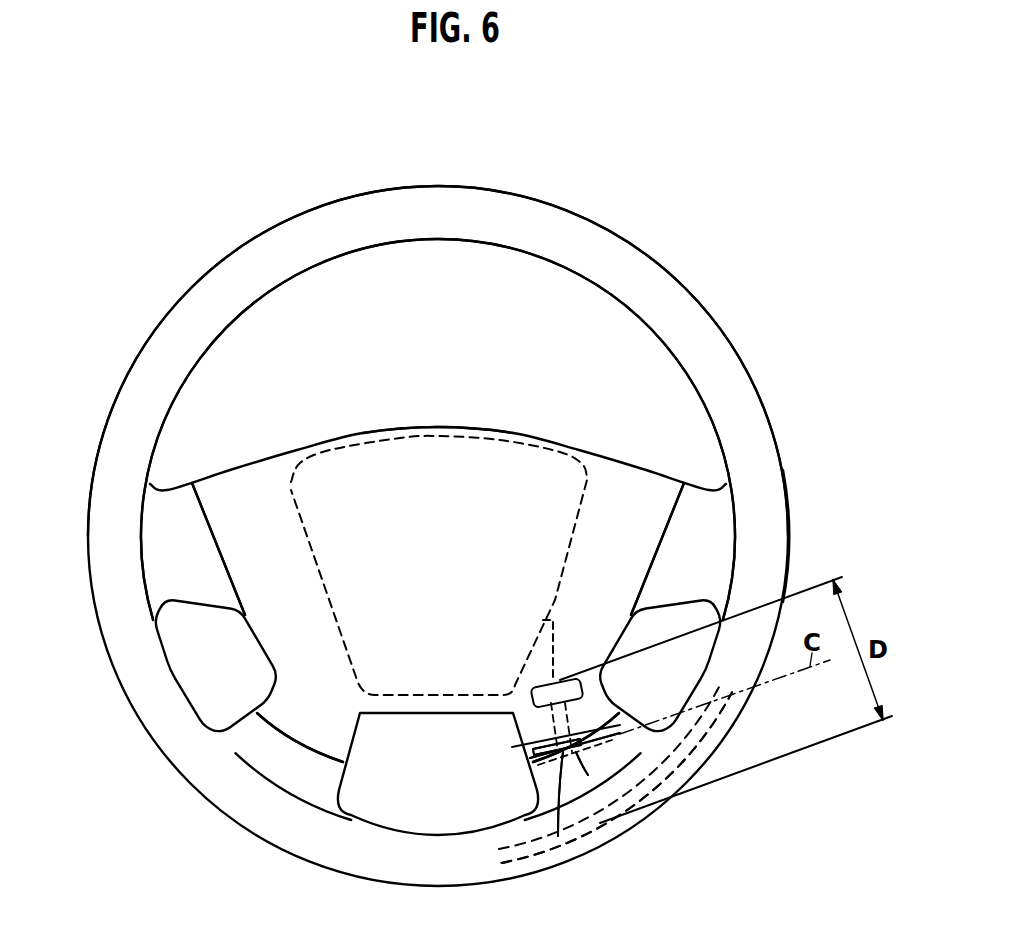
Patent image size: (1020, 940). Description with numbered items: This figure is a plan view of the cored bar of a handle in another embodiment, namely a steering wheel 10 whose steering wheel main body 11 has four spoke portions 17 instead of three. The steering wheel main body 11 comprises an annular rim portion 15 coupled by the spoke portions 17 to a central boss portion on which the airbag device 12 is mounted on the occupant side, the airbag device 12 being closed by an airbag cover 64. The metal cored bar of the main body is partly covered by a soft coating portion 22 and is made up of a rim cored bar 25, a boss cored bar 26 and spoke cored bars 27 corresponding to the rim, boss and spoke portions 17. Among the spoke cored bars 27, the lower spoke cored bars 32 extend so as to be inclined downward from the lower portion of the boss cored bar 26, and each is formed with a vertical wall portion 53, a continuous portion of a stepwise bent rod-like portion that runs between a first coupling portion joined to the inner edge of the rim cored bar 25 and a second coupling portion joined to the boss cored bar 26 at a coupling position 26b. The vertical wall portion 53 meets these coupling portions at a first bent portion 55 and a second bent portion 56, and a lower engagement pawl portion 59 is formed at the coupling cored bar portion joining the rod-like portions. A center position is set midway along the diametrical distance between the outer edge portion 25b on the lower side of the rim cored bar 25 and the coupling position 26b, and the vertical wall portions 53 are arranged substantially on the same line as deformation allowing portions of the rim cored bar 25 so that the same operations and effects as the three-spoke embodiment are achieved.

The steering wheel 10 is at (563, 145).
The steering wheel main body 11 is at (634, 249).
The airbag device 12 is at (489, 437).
The rim portion 15 is at (672, 300).
The spoke portions 17 is at (162, 557).
The soft coating portion 22 is at (776, 501).
The rim cored bar 25 is at (520, 860).
The outer edge portion 25b is at (589, 834).
The boss cored bar 26 is at (587, 470).
The coupling position 26b is at (563, 677).
The spoke cored bar 27 is at (558, 836).
The lower spoke cored bar 32 is at (573, 794).
The vertical wall portion 53 is at (531, 757).
The first bent portion 55 is at (575, 745).
The second bent portion 56 is at (557, 747).
The lower engagement pawl portion 59 is at (533, 740).
The airbag cover 64 is at (437, 425).